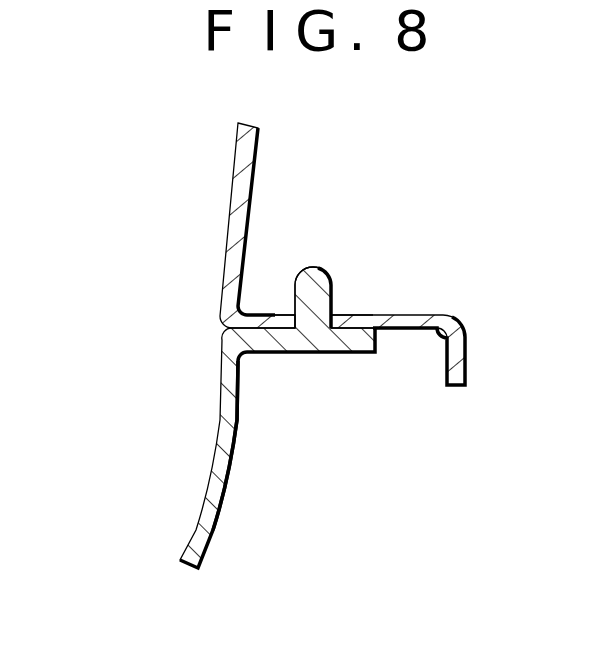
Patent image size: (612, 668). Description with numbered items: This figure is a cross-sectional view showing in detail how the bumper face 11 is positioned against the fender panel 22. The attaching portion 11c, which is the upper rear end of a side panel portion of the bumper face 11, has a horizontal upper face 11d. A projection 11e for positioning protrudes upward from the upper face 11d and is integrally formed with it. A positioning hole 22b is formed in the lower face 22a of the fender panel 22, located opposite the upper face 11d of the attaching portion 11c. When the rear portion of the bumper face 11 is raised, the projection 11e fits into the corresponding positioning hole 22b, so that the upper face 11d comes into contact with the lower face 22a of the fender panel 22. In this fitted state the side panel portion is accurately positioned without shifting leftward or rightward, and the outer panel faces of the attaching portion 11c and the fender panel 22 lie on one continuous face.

The bumper face 11 is at (214, 452).
The attaching portion 11c is at (229, 400).
The upper face 11d is at (273, 315).
The projection for positioning 11e is at (313, 268).
The fender panel 22 is at (231, 196).
The lower face 22a is at (395, 317).
The positioning hole 22b is at (332, 296).